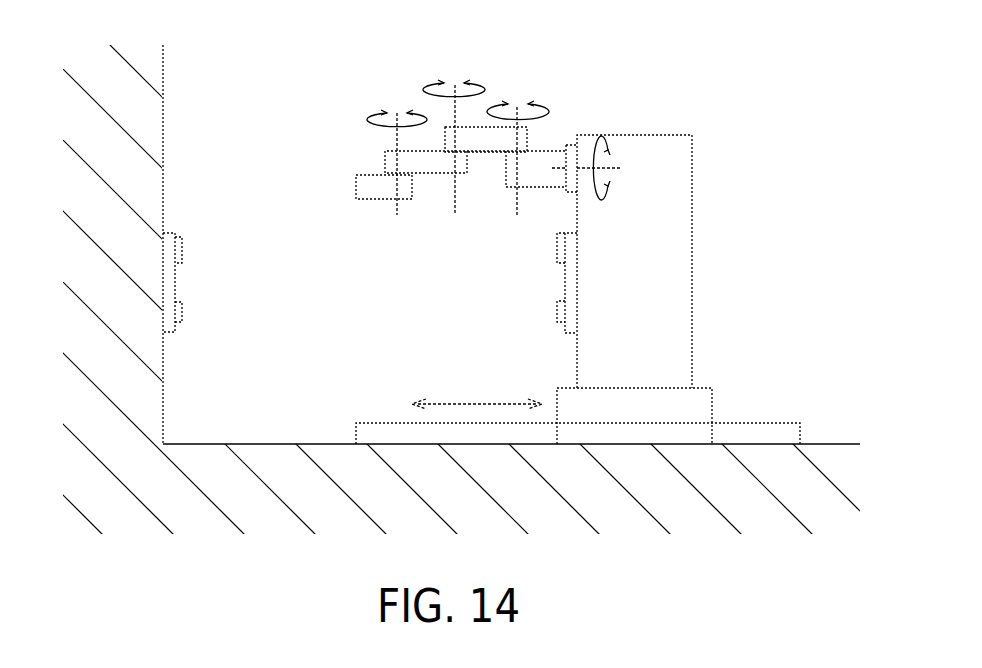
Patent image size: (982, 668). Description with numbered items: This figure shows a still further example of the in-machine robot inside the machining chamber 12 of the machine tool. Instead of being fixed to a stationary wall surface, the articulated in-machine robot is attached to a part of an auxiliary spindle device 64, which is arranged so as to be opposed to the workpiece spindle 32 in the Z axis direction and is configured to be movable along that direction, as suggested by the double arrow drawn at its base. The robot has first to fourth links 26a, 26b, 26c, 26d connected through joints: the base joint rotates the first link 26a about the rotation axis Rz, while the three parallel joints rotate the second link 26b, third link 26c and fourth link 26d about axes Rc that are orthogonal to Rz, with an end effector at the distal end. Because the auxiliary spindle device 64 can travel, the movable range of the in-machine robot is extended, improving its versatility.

The machining chamber 12 is at (342, 336).
The first link 26a is at (557, 153).
The second link 26b is at (482, 130).
The third link 26c is at (430, 177).
The fourth link 26d is at (363, 175).
The workpiece spindle 32 is at (172, 280).
The auxiliary spindle device 64 is at (677, 251).